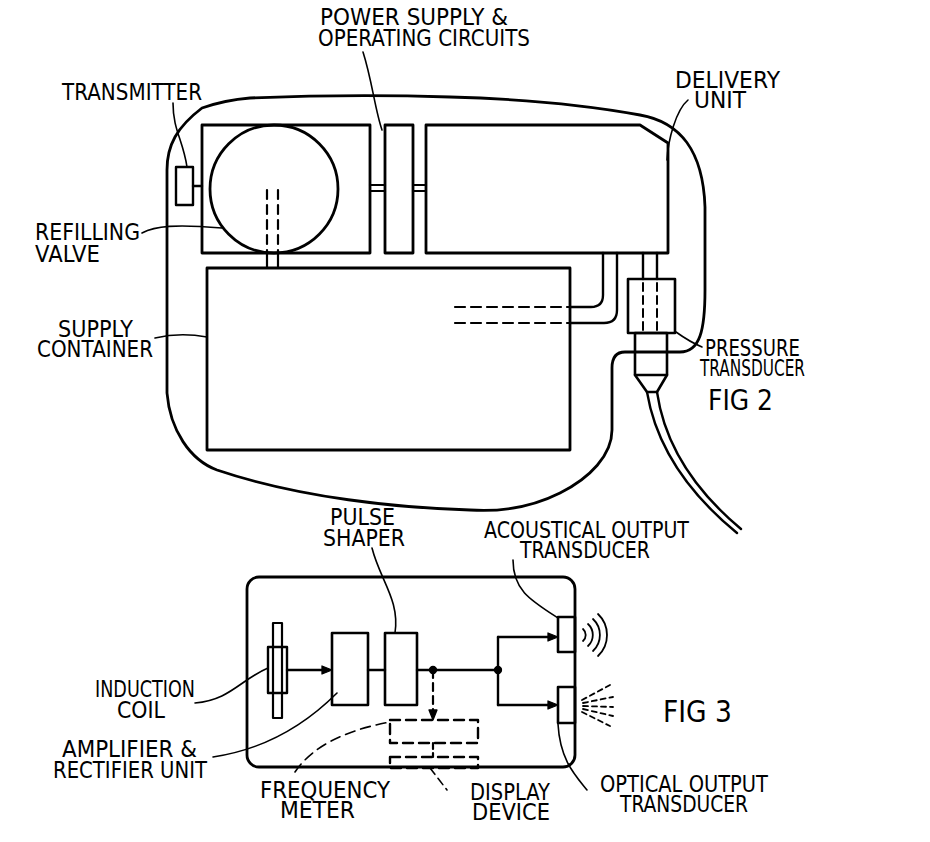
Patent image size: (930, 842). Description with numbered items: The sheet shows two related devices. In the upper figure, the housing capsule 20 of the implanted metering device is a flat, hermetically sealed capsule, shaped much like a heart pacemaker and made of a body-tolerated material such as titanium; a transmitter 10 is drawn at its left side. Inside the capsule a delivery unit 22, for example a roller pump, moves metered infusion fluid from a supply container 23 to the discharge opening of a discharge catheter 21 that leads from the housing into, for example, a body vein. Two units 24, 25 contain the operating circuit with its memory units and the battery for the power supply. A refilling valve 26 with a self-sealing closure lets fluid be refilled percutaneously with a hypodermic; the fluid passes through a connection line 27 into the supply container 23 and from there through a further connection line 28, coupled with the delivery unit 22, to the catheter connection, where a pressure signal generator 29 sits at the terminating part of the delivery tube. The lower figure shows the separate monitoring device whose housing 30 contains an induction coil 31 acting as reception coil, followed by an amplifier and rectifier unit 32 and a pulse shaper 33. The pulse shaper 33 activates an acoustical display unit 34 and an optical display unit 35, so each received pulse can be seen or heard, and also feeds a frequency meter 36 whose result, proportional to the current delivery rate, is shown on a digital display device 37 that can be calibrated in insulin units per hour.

In FIG. 2, the transmitter 10 is at (176, 186).
In FIG. 2, the housing capsule 20 is at (474, 89).
In FIG. 2, the discharge catheter 21 is at (683, 467).
In FIG. 2, the delivery unit 22 is at (547, 153).
In FIG. 2, the supply container 23 is at (232, 365).
In FIG. 2, the unit containing operating circuit with memory units and battery 24 is at (347, 148).
In FIG. 2, the unit containing operating circuit with memory units and battery 25 is at (398, 150).
In FIG. 2, the refilling valve 26 is at (265, 145).
In FIG. 2, the connection line 27 is at (267, 257).
In FIG. 2, the further connection line 28 is at (610, 266).
In FIG. 2, the pressure signal generator 29 is at (677, 304).
In FIG. 3, the housing of monitoring device 30 is at (247, 627).
In FIG. 3, the induction coil 31 is at (278, 623).
In FIG. 3, the amplifier and rectifier unit 32 is at (350, 633).
In FIG. 3, the pulse shaper 33 is at (393, 633).
In FIG. 3, the acoustical display unit 34 is at (562, 618).
In FIG. 3, the optical display unit 35 is at (560, 724).
In FIG. 3, the frequency meter 36 is at (457, 720).
In FIG. 3, the display device 37 is at (393, 757).